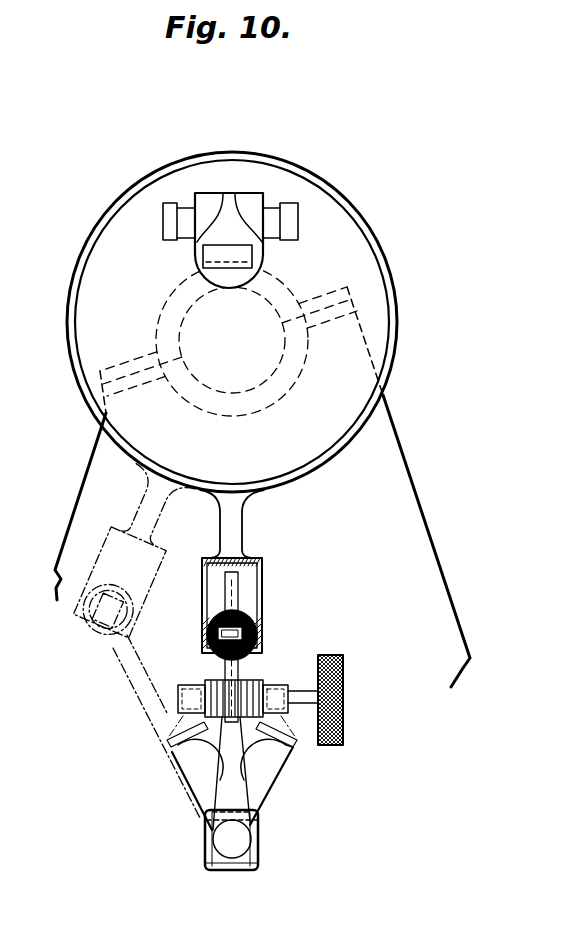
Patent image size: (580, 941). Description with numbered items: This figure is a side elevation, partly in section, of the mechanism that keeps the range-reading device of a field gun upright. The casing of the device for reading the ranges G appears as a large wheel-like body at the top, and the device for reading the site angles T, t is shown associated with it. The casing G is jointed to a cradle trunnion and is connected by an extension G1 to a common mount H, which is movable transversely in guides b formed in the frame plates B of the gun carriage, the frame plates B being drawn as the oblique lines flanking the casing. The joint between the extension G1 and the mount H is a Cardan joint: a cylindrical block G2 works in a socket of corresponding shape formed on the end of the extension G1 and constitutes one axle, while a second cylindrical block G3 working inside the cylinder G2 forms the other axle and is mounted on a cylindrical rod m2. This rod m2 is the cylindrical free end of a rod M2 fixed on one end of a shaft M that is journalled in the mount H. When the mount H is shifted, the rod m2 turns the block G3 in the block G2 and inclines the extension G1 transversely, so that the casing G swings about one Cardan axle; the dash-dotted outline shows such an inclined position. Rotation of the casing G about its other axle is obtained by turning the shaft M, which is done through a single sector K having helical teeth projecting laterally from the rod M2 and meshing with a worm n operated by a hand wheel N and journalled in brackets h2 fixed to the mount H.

The device for reading the ranges G is at (357, 378).
The frame plates B is at (391, 470).
The device for reading the site angles T is at (205, 238).
The device for reading the site angles t is at (247, 259).
The extension G1 is at (236, 533).
The cylindrical block G2 is at (258, 645).
The cylindrical rod m2 is at (239, 584).
The cylindrical block G3 is at (256, 629).
The worm n is at (203, 680).
The hand wheel N is at (344, 694).
The rod M2 is at (230, 772).
The sector K is at (270, 731).
The brackets h2 is at (262, 796).
The mount H is at (251, 858).
The shaft M is at (230, 838).
The guides b is at (205, 860).